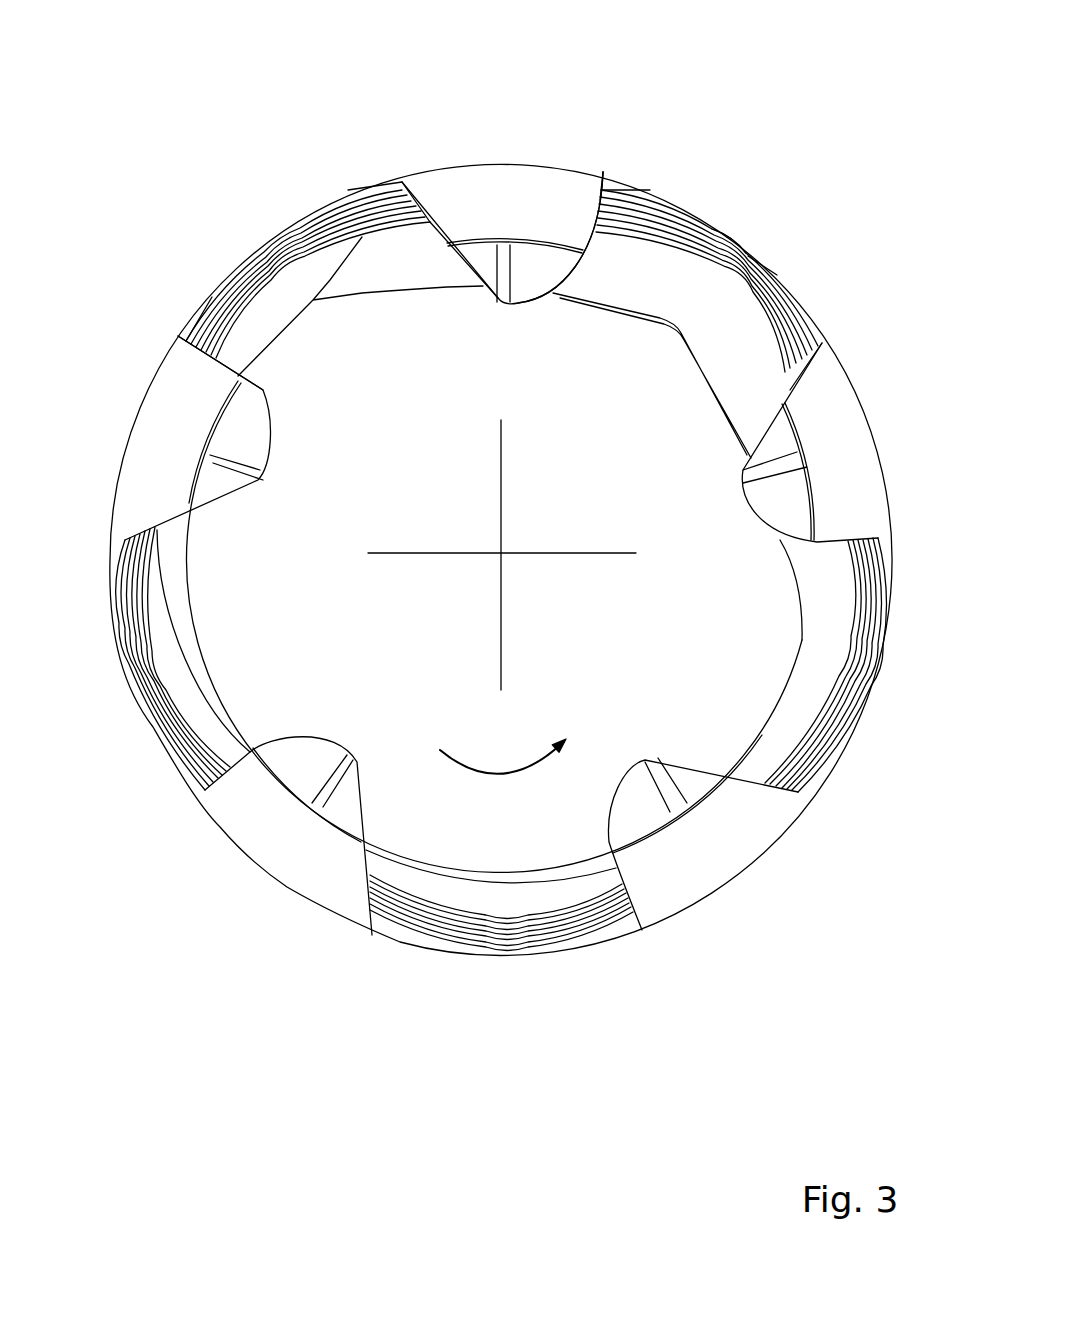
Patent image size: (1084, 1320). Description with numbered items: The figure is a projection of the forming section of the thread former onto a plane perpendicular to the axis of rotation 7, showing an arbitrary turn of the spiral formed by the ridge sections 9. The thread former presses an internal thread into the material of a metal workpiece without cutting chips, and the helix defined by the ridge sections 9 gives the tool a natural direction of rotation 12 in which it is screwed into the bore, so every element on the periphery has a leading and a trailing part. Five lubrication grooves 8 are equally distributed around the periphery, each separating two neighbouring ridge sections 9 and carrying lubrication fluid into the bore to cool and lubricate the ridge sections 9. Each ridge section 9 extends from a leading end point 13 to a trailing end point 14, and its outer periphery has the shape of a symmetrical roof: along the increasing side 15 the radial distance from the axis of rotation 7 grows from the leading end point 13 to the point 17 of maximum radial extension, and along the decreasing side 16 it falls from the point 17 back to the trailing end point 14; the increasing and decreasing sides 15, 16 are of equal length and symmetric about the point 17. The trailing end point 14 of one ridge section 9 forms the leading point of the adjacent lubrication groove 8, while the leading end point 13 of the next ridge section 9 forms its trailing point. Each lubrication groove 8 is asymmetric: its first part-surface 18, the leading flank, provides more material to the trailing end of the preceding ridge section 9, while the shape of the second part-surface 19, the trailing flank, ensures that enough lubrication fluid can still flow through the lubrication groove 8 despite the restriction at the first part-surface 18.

The axis of rotation 7 is at (500, 553).
The lubrication groove 8 is at (512, 146).
The ridge section 9 is at (280, 250).
The direction of rotation 12 is at (480, 772).
The leading end point 13 is at (188, 342).
The trailing end point 14 is at (406, 190).
The increasing side 15 is at (212, 297).
The decreasing side 16 is at (348, 190).
The point of maximum radial extension 17 is at (733, 227).
The first part-surface 18 is at (432, 220).
The second part-surface 19 is at (576, 262).